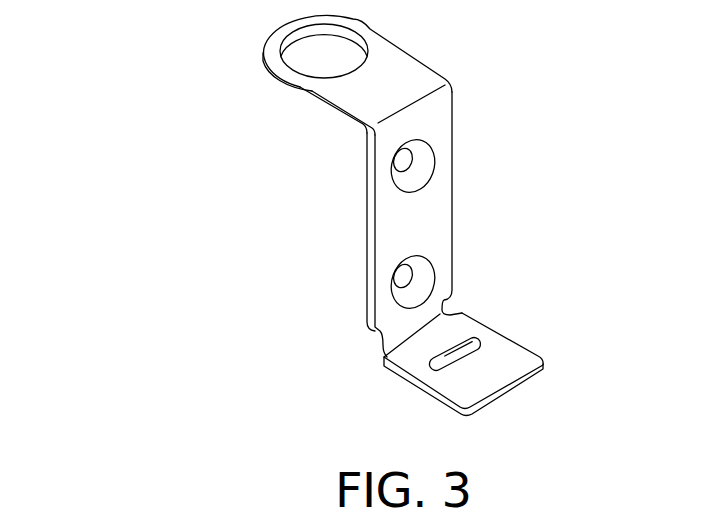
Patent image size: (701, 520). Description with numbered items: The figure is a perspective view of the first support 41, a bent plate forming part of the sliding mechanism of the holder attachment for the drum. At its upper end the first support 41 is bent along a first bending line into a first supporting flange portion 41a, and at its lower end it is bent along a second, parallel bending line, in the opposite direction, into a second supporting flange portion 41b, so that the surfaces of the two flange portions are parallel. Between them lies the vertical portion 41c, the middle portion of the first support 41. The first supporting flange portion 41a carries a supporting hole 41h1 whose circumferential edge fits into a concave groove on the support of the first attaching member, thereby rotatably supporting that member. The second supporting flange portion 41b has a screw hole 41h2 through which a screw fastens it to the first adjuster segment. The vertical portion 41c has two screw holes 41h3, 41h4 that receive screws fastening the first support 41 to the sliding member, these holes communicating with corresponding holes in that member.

The first support 41 is at (146, 89).
The first supporting flange portion 41a is at (362, 94).
The second supporting flange portion 41b is at (408, 357).
The vertical portion 41c is at (388, 208).
The supporting hole 41h1 is at (354, 40).
The screw hole 41h2 is at (448, 347).
The screw hole 41h3 is at (400, 156).
The screw hole 41h4 is at (401, 264).